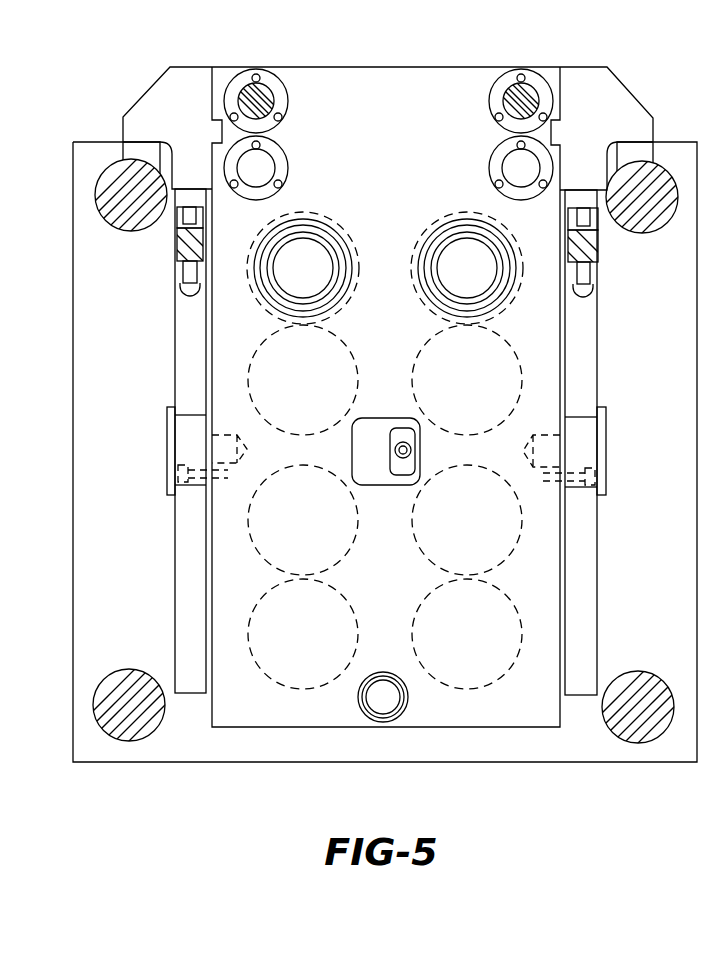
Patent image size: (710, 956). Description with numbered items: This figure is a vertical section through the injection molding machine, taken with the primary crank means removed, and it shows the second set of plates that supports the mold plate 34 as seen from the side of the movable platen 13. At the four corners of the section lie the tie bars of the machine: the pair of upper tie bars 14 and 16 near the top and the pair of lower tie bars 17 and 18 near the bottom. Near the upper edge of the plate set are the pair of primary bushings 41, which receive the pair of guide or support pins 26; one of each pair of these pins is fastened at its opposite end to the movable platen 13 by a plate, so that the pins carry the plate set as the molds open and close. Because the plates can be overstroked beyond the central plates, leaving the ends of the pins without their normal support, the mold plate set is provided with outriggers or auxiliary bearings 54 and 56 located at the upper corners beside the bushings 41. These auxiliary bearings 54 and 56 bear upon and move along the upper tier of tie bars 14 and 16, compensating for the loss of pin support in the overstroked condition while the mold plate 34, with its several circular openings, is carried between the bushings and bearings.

The movable platen 13 is at (95, 413).
The upper tie bar 14 is at (110, 183).
The upper tie bar 16 is at (658, 172).
The lower tie bar 17 is at (140, 718).
The lower tie bar 18 is at (632, 725).
The guide or support pin 26 is at (263, 100).
The mold plate 34 is at (394, 345).
The primary bushing 41 is at (264, 82).
The outrigger or auxiliary bearing 54 is at (141, 148).
The outrigger or auxiliary bearing 56 is at (641, 150).